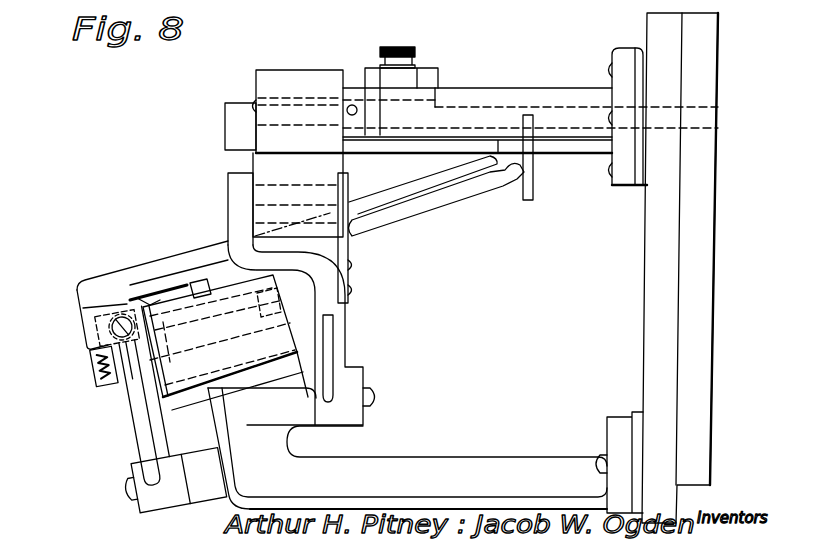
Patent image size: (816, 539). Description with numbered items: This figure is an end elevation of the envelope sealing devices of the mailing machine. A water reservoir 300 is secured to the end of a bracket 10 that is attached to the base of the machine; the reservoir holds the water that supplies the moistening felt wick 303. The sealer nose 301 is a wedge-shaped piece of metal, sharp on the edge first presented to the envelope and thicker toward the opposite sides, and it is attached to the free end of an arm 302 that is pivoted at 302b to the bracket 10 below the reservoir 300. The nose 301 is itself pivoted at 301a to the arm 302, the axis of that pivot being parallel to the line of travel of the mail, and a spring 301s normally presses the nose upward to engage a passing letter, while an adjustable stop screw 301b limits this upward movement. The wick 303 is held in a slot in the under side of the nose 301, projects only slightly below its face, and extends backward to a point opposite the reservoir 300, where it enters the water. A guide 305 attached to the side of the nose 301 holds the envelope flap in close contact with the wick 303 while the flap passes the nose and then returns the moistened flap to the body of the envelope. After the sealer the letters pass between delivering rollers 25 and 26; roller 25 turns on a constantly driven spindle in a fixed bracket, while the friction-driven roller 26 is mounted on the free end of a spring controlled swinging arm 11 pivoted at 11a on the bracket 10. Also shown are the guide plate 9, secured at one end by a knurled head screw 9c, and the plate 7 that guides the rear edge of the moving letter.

The guide plate 9 is at (232, 118).
The knurled head screw 9c is at (402, 45).
The delivering roller 25 is at (278, 77).
The delivering roller 26 is at (262, 157).
The plate 7 is at (535, 192).
The bracket 10 is at (437, 470).
The swinging arm 11 is at (340, 343).
The pivot 11a is at (375, 391).
The water reservoir 300 is at (250, 327).
The sealer nose 301 is at (450, 178).
The spring 301s is at (160, 283).
The pivot 301a is at (110, 328).
The adjustable stop screw 301b is at (104, 386).
The arm 302 is at (138, 440).
The pivot 302b is at (131, 500).
The felt wick 303 is at (208, 352).
The guide 305 is at (432, 198).